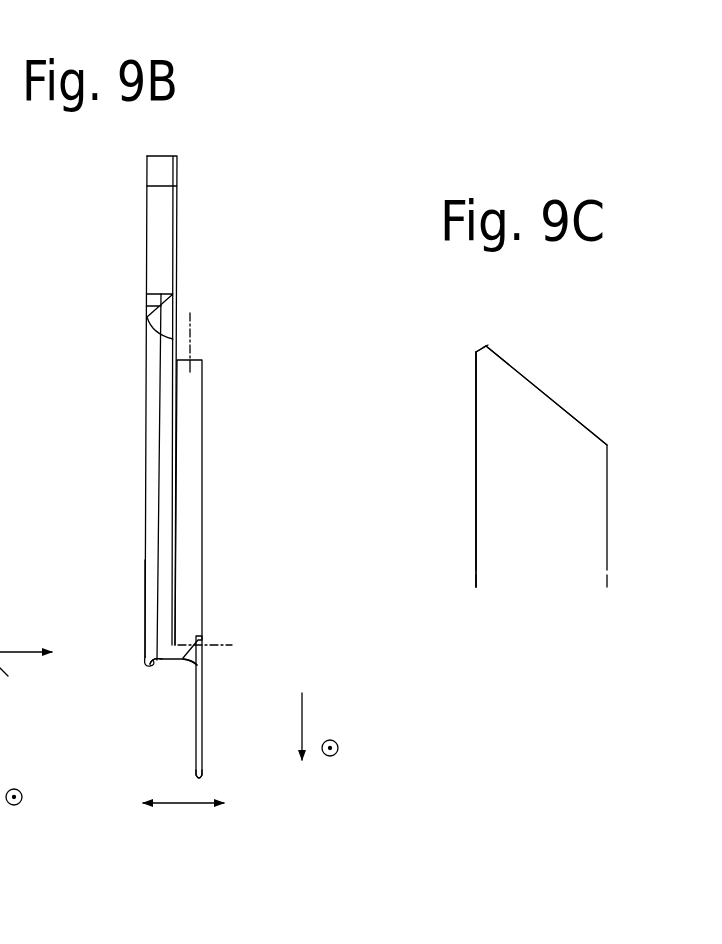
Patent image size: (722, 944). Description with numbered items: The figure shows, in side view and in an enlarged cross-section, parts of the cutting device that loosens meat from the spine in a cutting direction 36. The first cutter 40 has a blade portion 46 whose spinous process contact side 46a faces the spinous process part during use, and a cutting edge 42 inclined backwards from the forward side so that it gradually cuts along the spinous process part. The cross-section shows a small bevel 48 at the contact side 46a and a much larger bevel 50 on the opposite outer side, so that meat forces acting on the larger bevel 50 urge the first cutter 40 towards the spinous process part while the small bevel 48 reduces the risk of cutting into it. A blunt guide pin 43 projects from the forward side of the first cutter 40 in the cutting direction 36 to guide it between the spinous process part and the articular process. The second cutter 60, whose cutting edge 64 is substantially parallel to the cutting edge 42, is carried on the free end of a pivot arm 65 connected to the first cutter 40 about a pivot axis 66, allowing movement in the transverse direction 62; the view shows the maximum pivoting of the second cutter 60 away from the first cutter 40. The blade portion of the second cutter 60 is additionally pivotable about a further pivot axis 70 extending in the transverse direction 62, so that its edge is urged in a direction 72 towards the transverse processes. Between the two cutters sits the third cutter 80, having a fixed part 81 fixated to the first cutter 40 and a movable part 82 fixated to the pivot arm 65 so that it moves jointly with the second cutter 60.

In FIG. 9B, the cutting direction 36 is at (338, 745).
In FIG. 9B, the first cutter 40 is at (128, 440).
In FIG. 9C, the first cutter 40 is at (615, 445).
In FIG. 9B, the cutting edge 42 is at (145, 596).
In FIG. 9C, the cutting edge 42 is at (488, 340).
In FIG. 9B, the guide pin 43 is at (146, 662).
In FIG. 9C, the blade portion 46 is at (535, 517).
In FIG. 9B, the spinous process contact side 46a is at (140, 377).
In FIG. 9C, the spinous process contact side 46a is at (474, 470).
In FIG. 9C, the small bevel 48 is at (477, 345).
In FIG. 9B, the larger bevel 50 is at (153, 493).
In FIG. 9C, the larger bevel 50 is at (548, 390).
In FIG. 9B, the second cutter 60 is at (215, 752).
In FIG. 9B, the transverse direction 62 is at (187, 804).
In FIG. 9B, the cutting edge 64 is at (196, 765).
In FIG. 9B, the pivot arm 65 is at (190, 492).
In FIG. 9B, the pivot axis 66 is at (192, 326).
In FIG. 9B, the further pivot axis 70 is at (226, 643).
In FIG. 9B, the direction 72 is at (302, 725).
In FIG. 9B, the third cutter 80 is at (172, 672).
In FIG. 9B, the fixed part 81 is at (163, 670).
In FIG. 9B, the movable part 82 is at (188, 670).